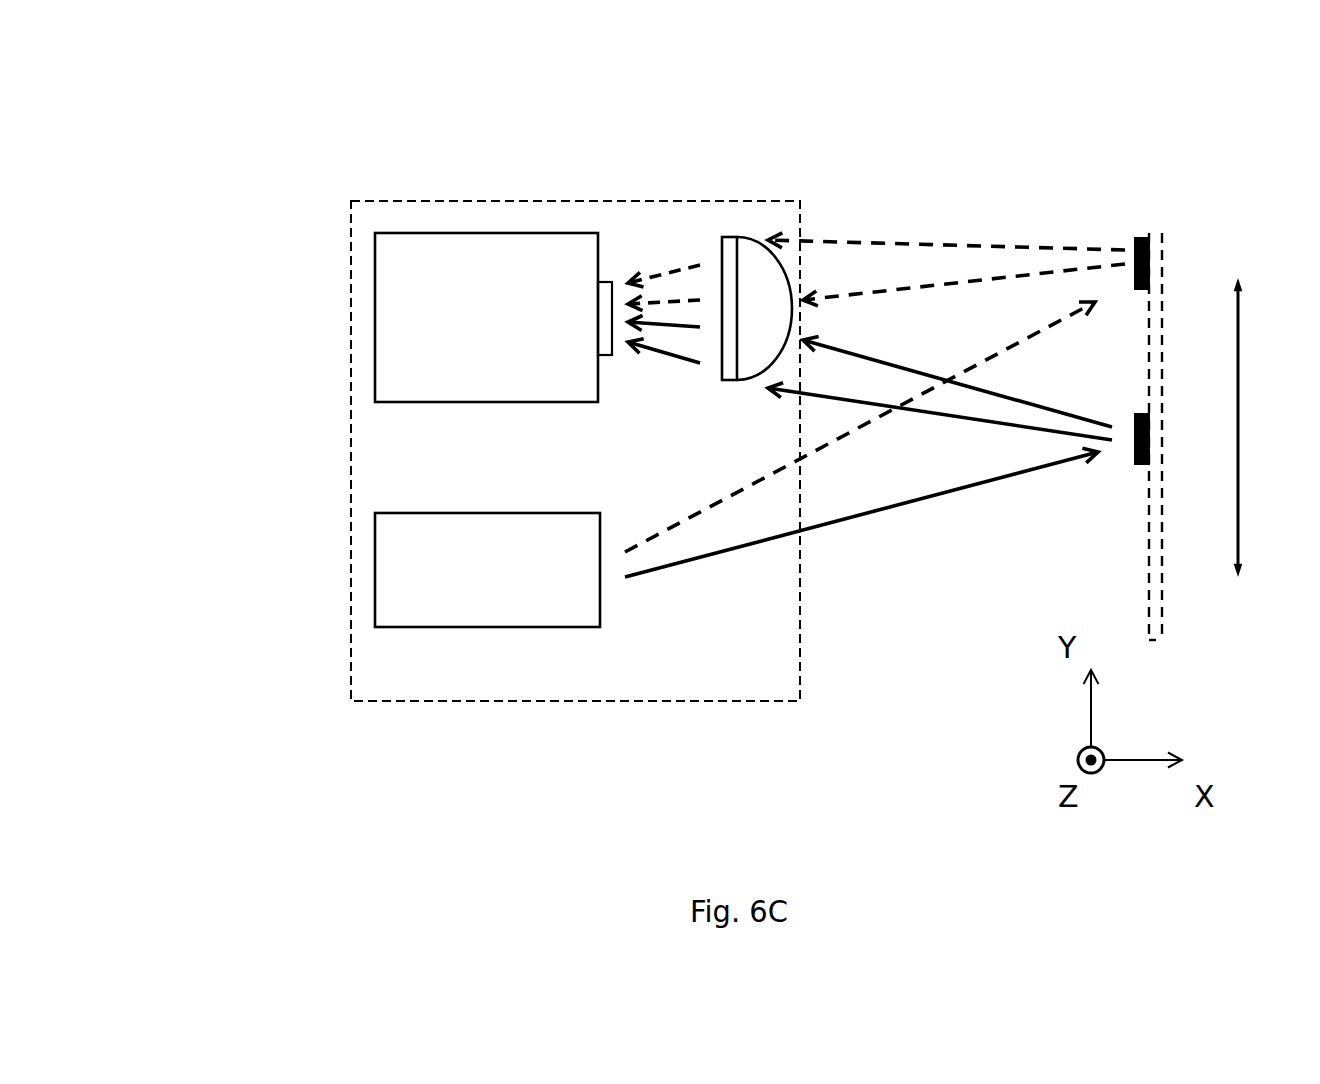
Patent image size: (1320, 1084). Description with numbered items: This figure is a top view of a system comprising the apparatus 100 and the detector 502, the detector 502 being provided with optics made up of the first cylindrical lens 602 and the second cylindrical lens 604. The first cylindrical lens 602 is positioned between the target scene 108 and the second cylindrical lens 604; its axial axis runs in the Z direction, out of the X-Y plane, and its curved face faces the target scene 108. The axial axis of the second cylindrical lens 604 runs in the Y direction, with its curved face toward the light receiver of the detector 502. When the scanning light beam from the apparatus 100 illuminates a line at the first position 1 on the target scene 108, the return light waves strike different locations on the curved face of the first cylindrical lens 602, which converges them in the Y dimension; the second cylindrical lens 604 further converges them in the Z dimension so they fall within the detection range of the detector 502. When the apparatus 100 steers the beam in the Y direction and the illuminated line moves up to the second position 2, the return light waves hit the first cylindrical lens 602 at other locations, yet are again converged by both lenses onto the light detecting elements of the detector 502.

The detector 502 is at (352, 334).
The apparatus 100 is at (352, 559).
The second cylindrical lens 604 is at (717, 226).
The first cylindrical lens 602 is at (756, 226).
The target scene 108 is at (1167, 355).
The first position 1 is at (1166, 439).
The second position 2 is at (1166, 263).